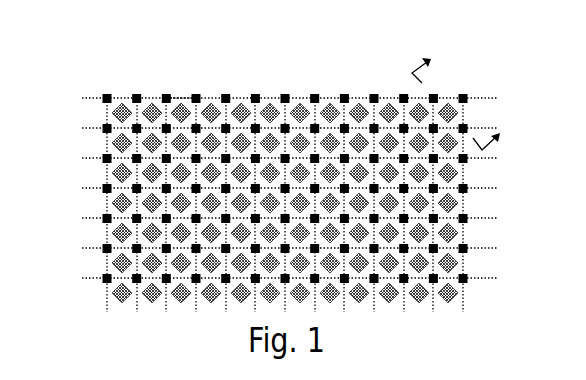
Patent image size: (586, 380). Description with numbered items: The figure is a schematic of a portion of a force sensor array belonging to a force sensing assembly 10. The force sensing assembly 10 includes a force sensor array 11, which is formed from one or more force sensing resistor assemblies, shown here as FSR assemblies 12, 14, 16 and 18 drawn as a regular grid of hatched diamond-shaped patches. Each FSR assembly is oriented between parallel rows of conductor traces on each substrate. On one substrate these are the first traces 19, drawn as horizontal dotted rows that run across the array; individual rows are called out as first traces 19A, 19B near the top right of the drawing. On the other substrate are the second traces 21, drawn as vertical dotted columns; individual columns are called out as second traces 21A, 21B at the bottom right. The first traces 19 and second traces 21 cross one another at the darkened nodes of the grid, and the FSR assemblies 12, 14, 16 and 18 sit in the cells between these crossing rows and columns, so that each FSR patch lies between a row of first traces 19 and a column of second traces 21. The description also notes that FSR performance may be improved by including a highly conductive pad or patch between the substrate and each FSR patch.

The force sensing assembly 10 is at (62, 78).
The force sensor array 11 is at (183, 99).
The FSR assembly 12 is at (450, 106).
The FSR assembly 14 is at (454, 171).
The FSR assembly 16 is at (455, 233).
The FSR assembly 18 is at (455, 293).
The first traces 19 is at (83, 214).
The first row line 19A is at (496, 98).
The second row line 19B is at (496, 128).
The second traces 21 is at (166, 313).
The first column line 21A is at (463, 312).
The second column line 21B is at (433, 312).